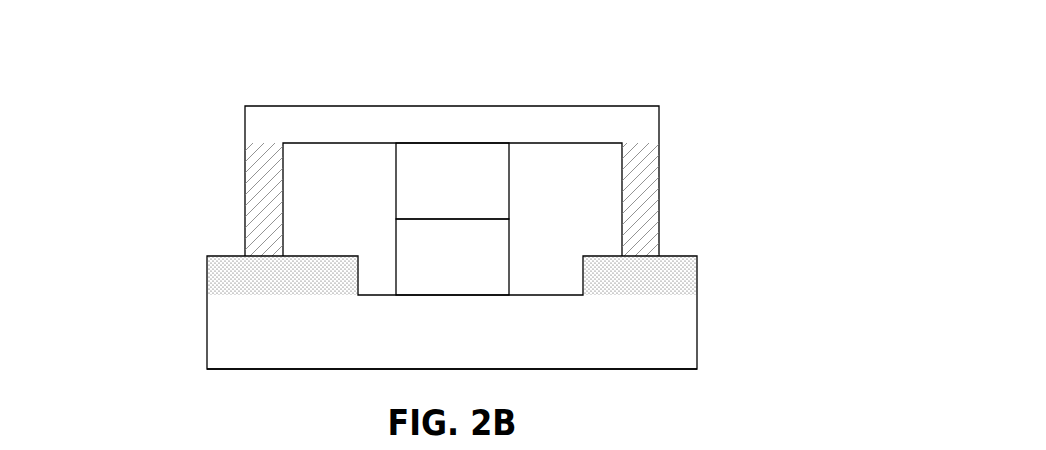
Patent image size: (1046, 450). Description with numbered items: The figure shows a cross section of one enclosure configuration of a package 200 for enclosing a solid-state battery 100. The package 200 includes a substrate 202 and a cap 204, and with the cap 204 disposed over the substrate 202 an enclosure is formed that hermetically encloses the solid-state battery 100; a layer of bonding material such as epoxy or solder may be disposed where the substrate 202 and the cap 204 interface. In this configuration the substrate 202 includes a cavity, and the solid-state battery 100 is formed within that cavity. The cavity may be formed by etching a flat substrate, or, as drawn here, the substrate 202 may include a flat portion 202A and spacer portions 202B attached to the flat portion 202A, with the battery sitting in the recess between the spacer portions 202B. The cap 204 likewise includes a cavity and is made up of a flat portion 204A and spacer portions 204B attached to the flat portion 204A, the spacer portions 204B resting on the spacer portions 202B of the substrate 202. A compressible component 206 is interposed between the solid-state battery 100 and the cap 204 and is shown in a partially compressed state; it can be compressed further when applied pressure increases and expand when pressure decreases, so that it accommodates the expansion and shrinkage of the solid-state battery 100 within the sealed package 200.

The package 200 is at (167, 162).
The cap 204 is at (472, 138).
The flat portion 204A is at (588, 126).
The spacer portions 204B is at (643, 192).
The compressible component 206 is at (472, 192).
The solid-state battery 100 is at (472, 267).
The substrate 202 is at (472, 351).
The spacer portions 202B is at (671, 278).
The flat portion 202A is at (672, 353).